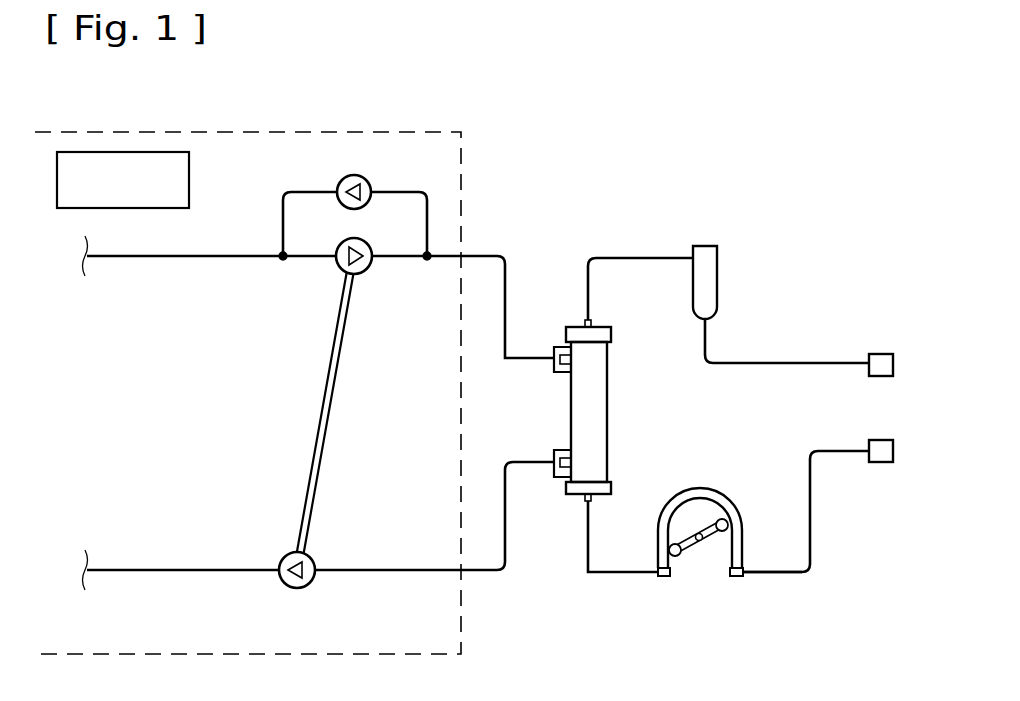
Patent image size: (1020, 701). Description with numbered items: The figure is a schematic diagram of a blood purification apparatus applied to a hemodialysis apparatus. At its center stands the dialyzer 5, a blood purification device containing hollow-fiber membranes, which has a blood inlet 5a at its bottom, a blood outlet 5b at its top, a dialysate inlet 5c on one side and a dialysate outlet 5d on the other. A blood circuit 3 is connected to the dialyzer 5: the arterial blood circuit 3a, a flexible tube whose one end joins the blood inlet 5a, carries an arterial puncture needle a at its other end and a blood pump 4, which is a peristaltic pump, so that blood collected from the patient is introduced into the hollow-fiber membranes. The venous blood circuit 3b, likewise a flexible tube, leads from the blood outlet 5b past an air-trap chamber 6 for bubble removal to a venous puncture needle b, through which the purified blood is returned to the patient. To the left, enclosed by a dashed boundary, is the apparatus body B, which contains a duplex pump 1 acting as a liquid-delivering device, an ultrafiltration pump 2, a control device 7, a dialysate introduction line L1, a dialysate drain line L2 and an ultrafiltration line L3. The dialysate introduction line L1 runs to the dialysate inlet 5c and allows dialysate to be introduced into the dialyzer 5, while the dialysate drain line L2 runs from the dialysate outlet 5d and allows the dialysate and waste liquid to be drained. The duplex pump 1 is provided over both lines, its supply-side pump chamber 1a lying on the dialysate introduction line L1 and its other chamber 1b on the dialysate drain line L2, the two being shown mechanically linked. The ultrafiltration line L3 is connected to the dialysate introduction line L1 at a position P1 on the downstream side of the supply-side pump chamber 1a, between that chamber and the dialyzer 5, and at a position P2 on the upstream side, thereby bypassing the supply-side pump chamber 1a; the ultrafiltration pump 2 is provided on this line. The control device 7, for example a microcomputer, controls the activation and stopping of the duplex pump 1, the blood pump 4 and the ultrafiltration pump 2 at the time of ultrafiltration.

The duplex pump 1 is at (304, 417).
The supply-side pump chamber 1a is at (358, 272).
The second pump 1b is at (290, 553).
The ultrafiltration pump 2 is at (362, 175).
The blood circuit 3 is at (829, 548).
The arterial blood circuit 3a is at (785, 574).
The venous blood circuit 3b is at (800, 363).
The blood pump 4 is at (710, 587).
The dialyzer 5 is at (636, 417).
The blood inlet 5a is at (591, 500).
The blood outlet 5b is at (592, 321).
The dialysate inlet 5c is at (560, 345).
The dialysate outlet 5d is at (562, 478).
The air-trap chamber 6 is at (718, 273).
The control device 7 is at (170, 152).
The apparatus body B is at (462, 165).
The dialysate introduction line L1 is at (175, 262).
The dialysate drain line L2 is at (167, 568).
The ultrafiltration line L3 is at (428, 222).
The position on the downstream side P1 is at (427, 262).
The position on the upstream side P2 is at (283, 262).
The arterial puncture needle a is at (880, 463).
The venous puncture needle b is at (884, 354).